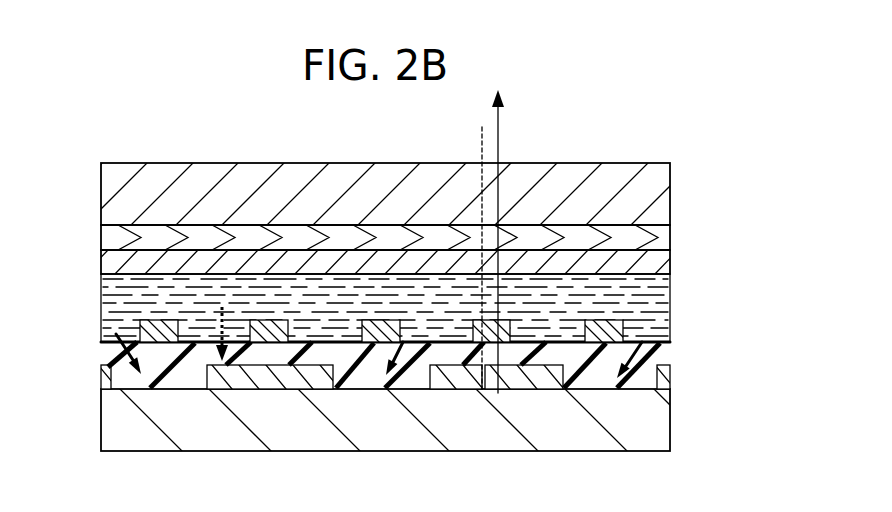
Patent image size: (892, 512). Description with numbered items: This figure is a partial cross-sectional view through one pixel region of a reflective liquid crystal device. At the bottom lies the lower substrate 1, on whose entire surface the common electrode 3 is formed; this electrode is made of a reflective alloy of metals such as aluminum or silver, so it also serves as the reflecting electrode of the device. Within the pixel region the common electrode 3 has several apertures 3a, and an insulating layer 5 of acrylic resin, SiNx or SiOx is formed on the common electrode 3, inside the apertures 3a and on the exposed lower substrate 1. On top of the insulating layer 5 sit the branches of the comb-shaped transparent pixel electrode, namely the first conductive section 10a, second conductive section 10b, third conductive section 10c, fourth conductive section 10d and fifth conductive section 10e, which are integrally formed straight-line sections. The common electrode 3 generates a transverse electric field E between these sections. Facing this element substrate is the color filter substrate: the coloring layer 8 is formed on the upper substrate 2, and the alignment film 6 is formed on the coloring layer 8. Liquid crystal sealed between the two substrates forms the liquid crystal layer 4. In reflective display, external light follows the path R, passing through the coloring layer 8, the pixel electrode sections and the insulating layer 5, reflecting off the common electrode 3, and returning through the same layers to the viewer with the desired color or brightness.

The lower substrate 1 is at (656, 424).
The upper substrate 2 is at (658, 202).
The common electrode 3 is at (219, 378).
The aperture 3a is at (117, 333).
The liquid crystal layer 4 is at (658, 290).
The insulating layer 5 is at (660, 357).
The alignment film 6 is at (658, 265).
The coloring layer 8 is at (658, 238).
The first conductive section 10a is at (153, 343).
The second conductive section 10b is at (267, 343).
The third conductive section 10c is at (373, 343).
The fourth conductive section 10d is at (490, 343).
The fifth conductive section 10e is at (607, 343).
The transverse electric field E is at (226, 306).
The path R is at (500, 128).